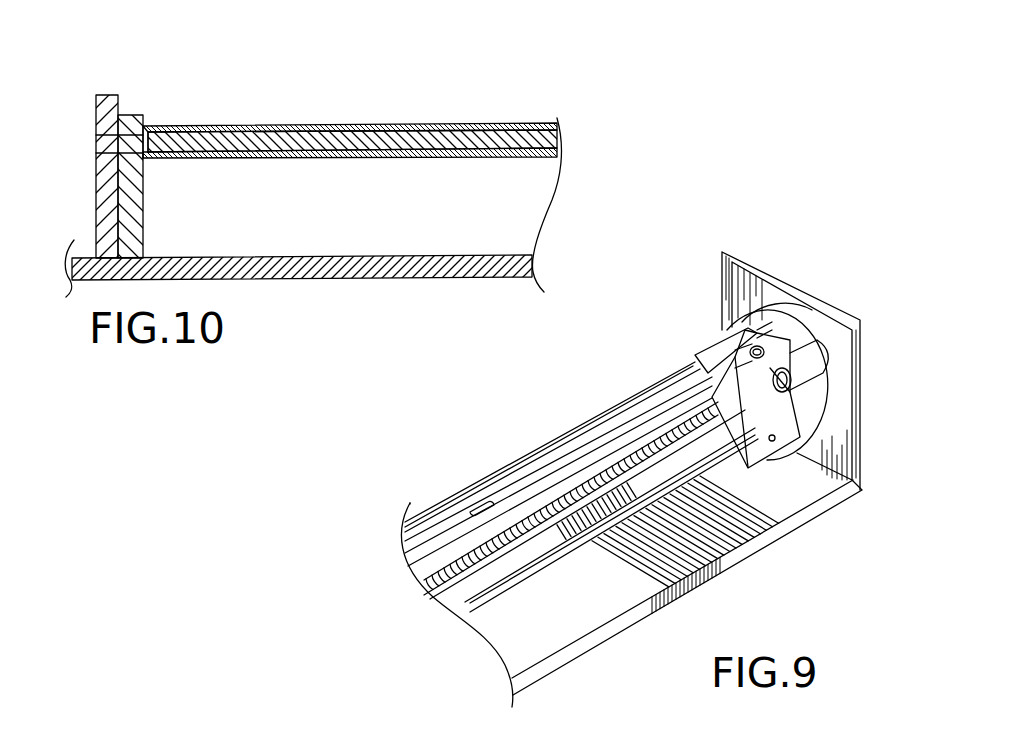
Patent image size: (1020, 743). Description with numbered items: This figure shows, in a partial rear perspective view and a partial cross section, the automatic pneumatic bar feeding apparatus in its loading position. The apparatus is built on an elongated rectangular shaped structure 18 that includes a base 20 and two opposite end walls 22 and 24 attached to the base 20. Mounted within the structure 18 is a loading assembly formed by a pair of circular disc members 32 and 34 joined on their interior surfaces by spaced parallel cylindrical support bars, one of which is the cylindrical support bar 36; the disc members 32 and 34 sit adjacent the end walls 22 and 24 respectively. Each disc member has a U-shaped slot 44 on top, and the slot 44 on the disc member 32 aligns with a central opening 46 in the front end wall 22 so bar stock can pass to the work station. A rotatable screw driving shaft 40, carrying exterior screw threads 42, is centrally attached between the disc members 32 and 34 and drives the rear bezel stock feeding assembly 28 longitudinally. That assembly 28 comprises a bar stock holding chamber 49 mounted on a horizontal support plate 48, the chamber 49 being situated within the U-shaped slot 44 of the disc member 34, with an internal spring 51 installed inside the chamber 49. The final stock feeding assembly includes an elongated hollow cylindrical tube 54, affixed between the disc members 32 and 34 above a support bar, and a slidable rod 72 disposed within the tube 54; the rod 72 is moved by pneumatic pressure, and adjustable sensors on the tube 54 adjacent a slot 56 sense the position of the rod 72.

In FIG. 9, the elongated rectangular shaped structure 18 is at (864, 490).
In FIG. 10, the base 20 is at (368, 256).
In FIG. 9, the base 20 is at (747, 525).
In FIG. 10, the front end wall 22 is at (95, 213).
In FIG. 9, the rear end wall 24 is at (861, 345).
In FIG. 9, the rear bezel stock feeding assembly 28 is at (688, 356).
In FIG. 10, the circular disc member 32 is at (143, 204).
In FIG. 9, the circular disc member 34 is at (779, 317).
In FIG. 9, the cylindrical support bar 36 is at (477, 612).
In FIG. 9, the screw driving shaft 40 is at (415, 577).
In FIG. 9, the exterior screw threads 42 is at (560, 497).
In FIG. 9, the U-shaped slot 44 is at (832, 358).
In FIG. 10, the central opening 46 is at (96, 138).
In FIG. 9, the horizontal support plate 48 is at (747, 470).
In FIG. 9, the bar stock holding chamber 49 is at (807, 345).
In FIG. 9, the internal spring 51 is at (787, 395).
In FIG. 10, the elongated hollow cylindrical tube 54 is at (518, 122).
In FIG. 9, the elongated hollow cylindrical tube 54 is at (608, 442).
In FIG. 10, the slot 56 is at (477, 127).
In FIG. 10, the slidable rod 72 is at (222, 125).